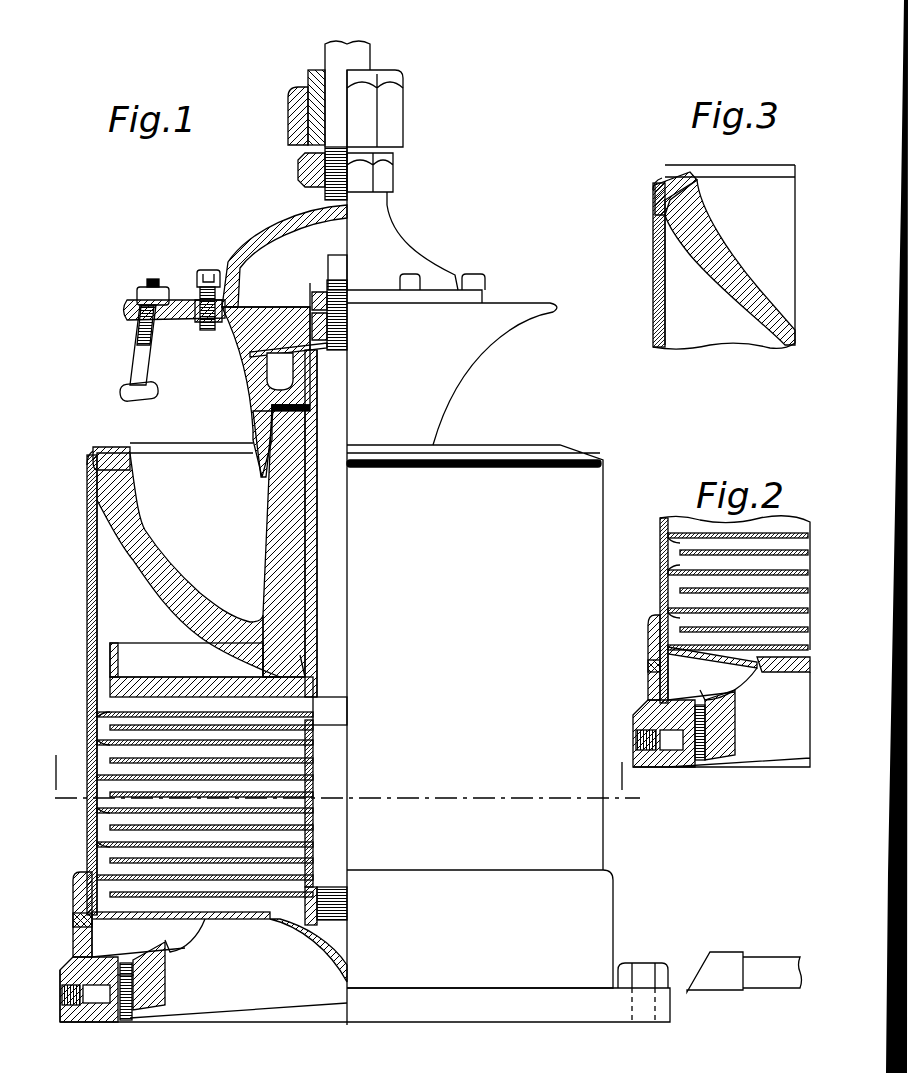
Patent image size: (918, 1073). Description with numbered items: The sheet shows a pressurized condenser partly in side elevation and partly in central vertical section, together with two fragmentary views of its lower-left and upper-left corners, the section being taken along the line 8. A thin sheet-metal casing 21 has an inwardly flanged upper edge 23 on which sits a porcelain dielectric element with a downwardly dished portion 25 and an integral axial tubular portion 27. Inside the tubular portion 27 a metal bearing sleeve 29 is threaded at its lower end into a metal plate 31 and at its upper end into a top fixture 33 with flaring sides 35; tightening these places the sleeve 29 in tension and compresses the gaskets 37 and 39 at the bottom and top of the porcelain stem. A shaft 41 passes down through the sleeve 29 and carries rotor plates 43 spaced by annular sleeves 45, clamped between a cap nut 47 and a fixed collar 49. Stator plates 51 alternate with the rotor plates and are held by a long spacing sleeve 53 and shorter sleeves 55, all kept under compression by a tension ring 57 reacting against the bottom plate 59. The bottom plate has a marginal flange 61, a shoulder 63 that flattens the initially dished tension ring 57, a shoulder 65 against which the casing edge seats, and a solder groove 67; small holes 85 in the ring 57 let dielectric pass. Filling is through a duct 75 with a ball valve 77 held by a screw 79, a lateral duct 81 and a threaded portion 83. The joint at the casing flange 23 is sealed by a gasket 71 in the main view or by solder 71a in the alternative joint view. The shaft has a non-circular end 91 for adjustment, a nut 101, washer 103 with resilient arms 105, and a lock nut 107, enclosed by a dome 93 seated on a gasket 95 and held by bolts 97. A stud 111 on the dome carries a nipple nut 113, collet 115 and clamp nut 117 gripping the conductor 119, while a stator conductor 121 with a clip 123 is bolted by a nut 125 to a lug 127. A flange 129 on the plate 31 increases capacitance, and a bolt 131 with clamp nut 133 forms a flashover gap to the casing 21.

In FIG. 1, the section line 8 is at (338, 782).
In FIG. 1, the casing 21 is at (87, 650).
In FIG. 2, the casing 21 is at (660, 528).
In FIG. 3, the casing 21 is at (653, 260).
In FIG. 1, the inwardly flanged upper edge 23 is at (120, 450).
In FIG. 3, the inwardly flanged upper edge 23 is at (672, 175).
In FIG. 1, the downwardly dished portion 25 is at (165, 560).
In FIG. 3, the downwardly dished portion 25 is at (735, 270).
In FIG. 1, the tubular portion 27 is at (275, 500).
In FIG. 1, the metal bearing sleeve 29 is at (317, 517).
In FIG. 1, the metal plate 31 is at (203, 690).
In FIG. 1, the top fixture 33 is at (245, 375).
In FIG. 1, the flaring sides 35 is at (127, 312).
In FIG. 1, the sealing gasket 37 is at (307, 665).
In FIG. 1, the sealing gasket 39 is at (255, 418).
In FIG. 1, the shaft 41 is at (335, 555).
In FIG. 1, the rotor plates 43 is at (313, 752).
In FIG. 2, the rotor plates 43 is at (760, 590).
In FIG. 1, the annular spacing sleeves 45 is at (313, 792).
In FIG. 1, the cap nut 47 is at (300, 945).
In FIG. 1, the fixed collar 49 is at (348, 710).
In FIG. 1, the stator plates 51 is at (97, 742).
In FIG. 2, the stator plates 51 is at (668, 572).
In FIG. 1, the long spacing sleeve 53 is at (100, 625).
In FIG. 3, the long spacing sleeve 53 is at (670, 330).
In FIG. 1, the annular spacing sleeves 55 is at (97, 845).
In FIG. 2, the annular spacing sleeves 55 is at (668, 612).
In FIG. 1, the tension ring 57 is at (138, 938).
In FIG. 2, the tension ring 57 is at (701, 677).
In FIG. 1, the bottom plate 59 is at (365, 974).
In FIG. 2, the bottom plate 59 is at (721, 719).
In FIG. 1, the annular marginal flange 61 is at (73, 885).
In FIG. 2, the annular marginal flange 61 is at (648, 635).
In FIG. 1, the shoulder 63 is at (198, 926).
In FIG. 2, the shoulder 63 is at (762, 675).
In FIG. 1, the shoulder 65 is at (73, 960).
In FIG. 2, the shoulder 65 is at (648, 700).
In FIG. 1, the annular solder groove 67 is at (73, 922).
In FIG. 2, the annular solder groove 67 is at (648, 665).
In FIG. 1, the gasket 71 is at (88, 458).
In FIG. 3, the solder 71a is at (660, 178).
In FIG. 1, the duct 75 is at (134, 972).
In FIG. 2, the duct 75 is at (708, 715).
In FIG. 1, the ball valve 77 is at (134, 985).
In FIG. 1, the screw 79 is at (128, 1012).
In FIG. 1, the lateral duct 81 is at (97, 1004).
In FIG. 2, the lateral duct 81 is at (672, 750).
In FIG. 1, the screw threaded portion 83 is at (428, 238).
In FIG. 1, the small holes 85 is at (160, 915).
In FIG. 2, the small holes 85 is at (705, 662).
In FIG. 1, the non-circular upper end of shaft 91 is at (328, 262).
In FIG. 1, the dome 93 is at (283, 232).
In FIG. 1, the gasket 95 is at (225, 305).
In FIG. 1, the bolts 97 is at (210, 268).
In FIG. 1, the nut 101 is at (312, 322).
In FIG. 1, the washer 103 is at (300, 348).
In FIG. 1, the resilient radial arms 105 is at (268, 350).
In FIG. 1, the lock nut 107 is at (312, 295).
In FIG. 1, the stud 111 is at (393, 185).
In FIG. 1, the nipple nut 113 is at (298, 165).
In FIG. 1, the conical collet 115 is at (300, 90).
In FIG. 1, the clamp nut 117 is at (288, 106).
In FIG. 1, the conductor 119 is at (372, 52).
In FIG. 1, the conductor 121 is at (770, 966).
In FIG. 1, the clip 123 is at (718, 986).
In FIG. 1, the nut 125 is at (660, 966).
In FIG. 1, the lug 127 is at (672, 1012).
In FIG. 1, the cylindrical flange 129 is at (125, 662).
In FIG. 1, the bolt 131 is at (138, 342).
In FIG. 1, the clamp nut 133 is at (137, 296).